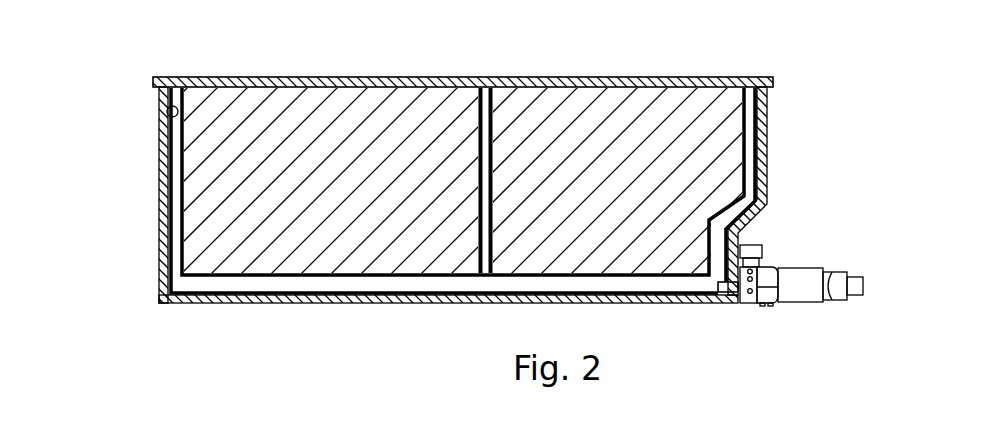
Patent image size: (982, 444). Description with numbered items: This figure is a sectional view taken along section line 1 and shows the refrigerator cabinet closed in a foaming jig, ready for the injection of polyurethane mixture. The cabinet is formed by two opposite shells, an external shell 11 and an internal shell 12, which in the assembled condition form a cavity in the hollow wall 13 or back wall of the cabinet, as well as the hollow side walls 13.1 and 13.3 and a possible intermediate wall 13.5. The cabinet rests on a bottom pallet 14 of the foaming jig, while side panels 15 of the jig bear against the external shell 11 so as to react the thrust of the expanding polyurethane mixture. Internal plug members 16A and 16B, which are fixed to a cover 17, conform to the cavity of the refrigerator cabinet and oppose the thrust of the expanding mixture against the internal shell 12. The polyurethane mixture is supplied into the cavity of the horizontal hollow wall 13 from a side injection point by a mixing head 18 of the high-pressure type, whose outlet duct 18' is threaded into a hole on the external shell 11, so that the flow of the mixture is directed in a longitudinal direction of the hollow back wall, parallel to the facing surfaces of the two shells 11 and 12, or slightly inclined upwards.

The section line 1 is at (93, 332).
The external shell 11 is at (168, 116).
The internal shell 12 is at (186, 158).
The hollow wall 13 is at (465, 197).
The hollow side wall 13.1 is at (173, 167).
The hollow side wall 13.3 is at (748, 102).
The intermediate wall 13.5 is at (487, 110).
The bottom pallet 14 is at (393, 296).
The side panel 15 is at (165, 206).
The internal plug member 16A is at (305, 125).
The internal plug member 16B is at (653, 122).
The cover 17 is at (422, 83).
The mixing head 18 is at (801, 258).
The outlet duct 18' is at (728, 331).